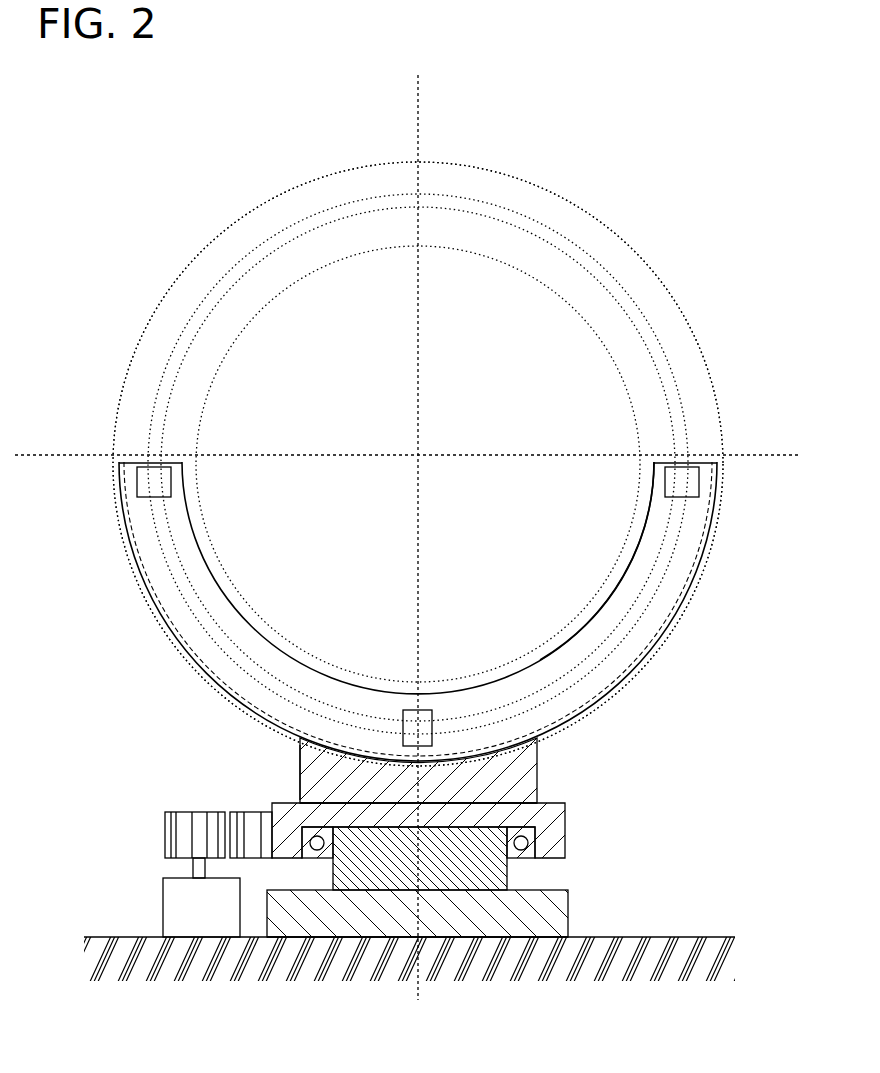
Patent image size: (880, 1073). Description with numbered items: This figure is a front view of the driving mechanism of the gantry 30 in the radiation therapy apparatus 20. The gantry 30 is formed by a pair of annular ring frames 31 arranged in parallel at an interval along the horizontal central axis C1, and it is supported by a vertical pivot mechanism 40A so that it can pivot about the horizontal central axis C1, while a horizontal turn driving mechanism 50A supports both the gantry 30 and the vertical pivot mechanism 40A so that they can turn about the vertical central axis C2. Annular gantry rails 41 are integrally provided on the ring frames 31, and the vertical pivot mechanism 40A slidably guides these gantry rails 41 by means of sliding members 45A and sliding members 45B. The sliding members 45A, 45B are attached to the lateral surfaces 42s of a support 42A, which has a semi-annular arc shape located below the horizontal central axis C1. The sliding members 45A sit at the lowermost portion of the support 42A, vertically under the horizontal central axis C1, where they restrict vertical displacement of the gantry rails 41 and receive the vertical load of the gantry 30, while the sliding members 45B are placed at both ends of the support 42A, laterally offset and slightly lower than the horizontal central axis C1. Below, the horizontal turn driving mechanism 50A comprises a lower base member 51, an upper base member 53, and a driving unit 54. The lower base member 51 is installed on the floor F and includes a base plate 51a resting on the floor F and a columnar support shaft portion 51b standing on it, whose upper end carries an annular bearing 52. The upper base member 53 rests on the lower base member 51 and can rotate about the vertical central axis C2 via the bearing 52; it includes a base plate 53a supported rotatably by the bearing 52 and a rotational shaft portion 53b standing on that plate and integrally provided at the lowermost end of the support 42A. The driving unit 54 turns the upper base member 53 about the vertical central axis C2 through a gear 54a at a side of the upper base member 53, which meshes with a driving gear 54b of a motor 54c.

The radiation therapy apparatus 20 is at (641, 205).
The gantry 30 is at (250, 207).
The ring frame 31 is at (363, 162).
The vertical pivot mechanism 40A is at (650, 733).
The gantry rail 41 is at (275, 650).
The support 42A is at (355, 683).
The lateral surface 42s is at (628, 563).
The sliding member 45A is at (431, 710).
The sliding member 45B is at (172, 482).
The horizontal turn driving mechanism 50A is at (645, 873).
The lower base member 51 is at (568, 912).
The base plate 51a is at (575, 930).
The support shaft portion 51b is at (517, 887).
The bearing 52 is at (545, 869).
The upper base member 53 is at (538, 770).
The base plate 53a is at (298, 802).
The rotational shaft portion 53b is at (300, 776).
The driving unit 54 is at (177, 891).
The gear 54a is at (257, 858).
The driving gear 54b is at (165, 845).
The motor 54c is at (163, 898).
The horizontal central axis C1 is at (425, 452).
The vertical central axis C2 is at (419, 133).
The floor F is at (710, 937).